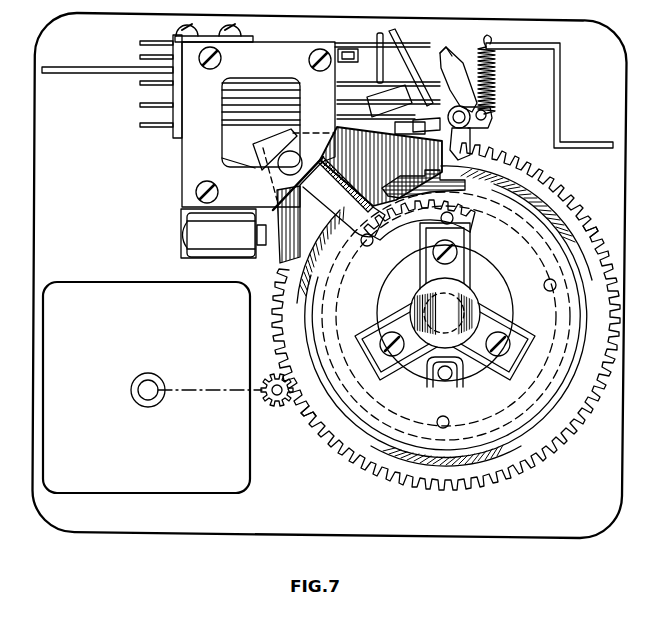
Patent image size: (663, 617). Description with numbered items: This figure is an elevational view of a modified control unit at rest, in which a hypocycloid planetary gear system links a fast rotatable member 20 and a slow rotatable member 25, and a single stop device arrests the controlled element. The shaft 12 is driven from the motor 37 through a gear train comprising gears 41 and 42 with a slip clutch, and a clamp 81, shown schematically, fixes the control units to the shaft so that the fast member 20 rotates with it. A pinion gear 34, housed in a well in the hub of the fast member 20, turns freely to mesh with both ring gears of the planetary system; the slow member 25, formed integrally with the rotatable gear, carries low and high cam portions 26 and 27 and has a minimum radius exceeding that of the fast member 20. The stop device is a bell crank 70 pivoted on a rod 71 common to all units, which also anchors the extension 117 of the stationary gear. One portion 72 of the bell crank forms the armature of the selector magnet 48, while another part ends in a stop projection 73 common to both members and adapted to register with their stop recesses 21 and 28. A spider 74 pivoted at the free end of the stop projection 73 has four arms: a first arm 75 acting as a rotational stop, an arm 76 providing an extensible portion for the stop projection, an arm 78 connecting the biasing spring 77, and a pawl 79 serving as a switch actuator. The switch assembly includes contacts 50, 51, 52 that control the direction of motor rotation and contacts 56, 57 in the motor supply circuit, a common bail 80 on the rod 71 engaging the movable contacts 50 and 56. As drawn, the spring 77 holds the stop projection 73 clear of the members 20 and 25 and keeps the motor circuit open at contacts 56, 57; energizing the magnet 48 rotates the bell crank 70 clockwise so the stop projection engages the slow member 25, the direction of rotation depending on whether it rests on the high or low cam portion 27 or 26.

The shaft 12 is at (466, 298).
The fast rotatable member 20 is at (560, 203).
The stop recess 21 is at (469, 225).
The slow rotatable member 25 is at (581, 220).
The low cam portion 26 is at (368, 449).
The high cam portion 27 is at (541, 192).
The stop recess 28 is at (463, 170).
The pinion gear 34 is at (435, 217).
The motor 37 is at (242, 491).
The gear 41 is at (277, 408).
The gear 42 is at (328, 424).
The selector magnet 48 is at (200, 231).
The movable contact 50 is at (450, 88).
The contact 51 is at (384, 149).
The contact 52 is at (398, 80).
The movable contact 56 is at (341, 47).
The contact 57 is at (350, 63).
The bell crank 70 is at (336, 124).
The rod 71 is at (283, 168).
The first portion 72 is at (278, 248).
The stop projection 73 is at (354, 189).
The spider 74 is at (491, 118).
The first arm 75 is at (423, 127).
The arm 76 is at (473, 150).
The biasing spring 77 is at (497, 75).
The arm 78 is at (487, 114).
The pawl 79 is at (454, 56).
The common bail 80 is at (405, 64).
The clamp 81 is at (405, 306).
The extension 117 is at (297, 188).